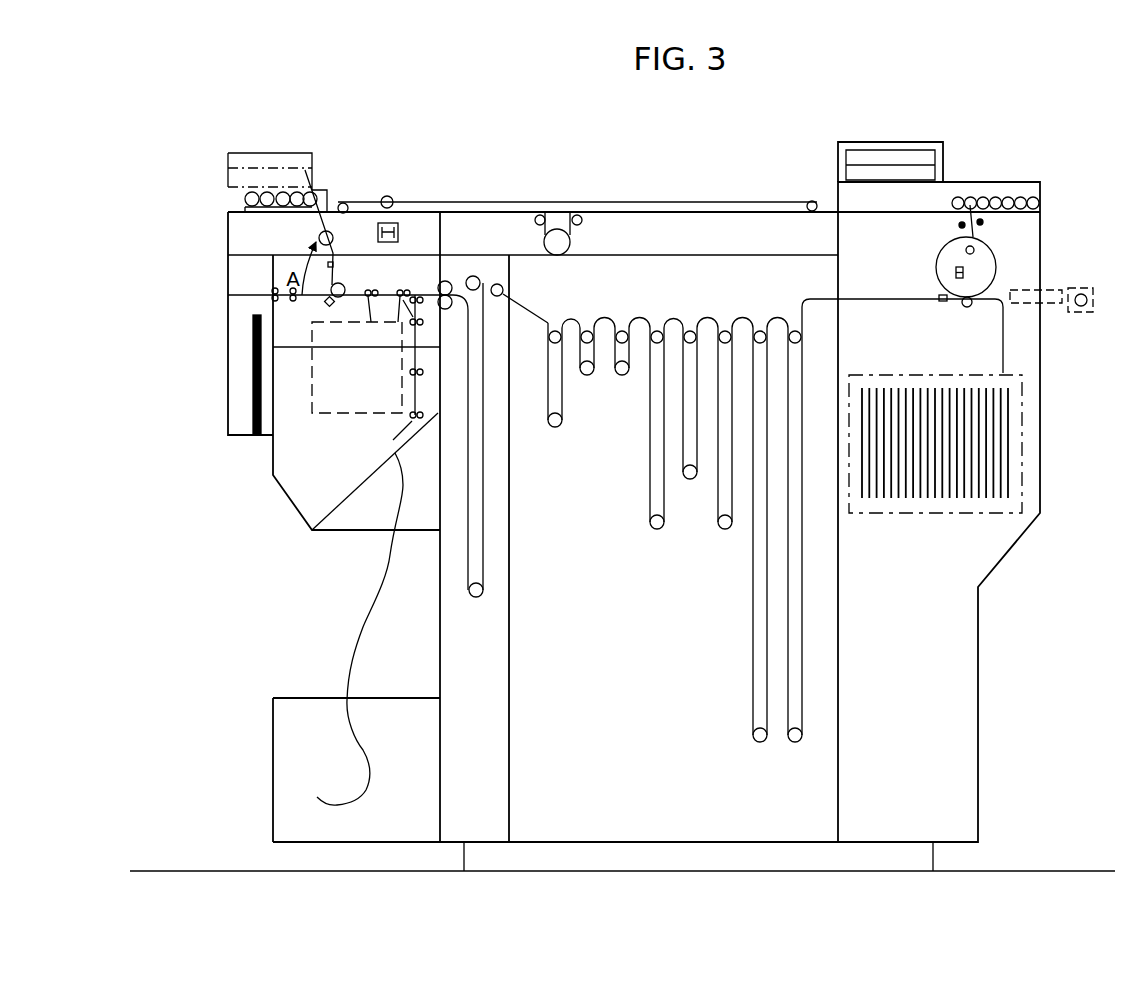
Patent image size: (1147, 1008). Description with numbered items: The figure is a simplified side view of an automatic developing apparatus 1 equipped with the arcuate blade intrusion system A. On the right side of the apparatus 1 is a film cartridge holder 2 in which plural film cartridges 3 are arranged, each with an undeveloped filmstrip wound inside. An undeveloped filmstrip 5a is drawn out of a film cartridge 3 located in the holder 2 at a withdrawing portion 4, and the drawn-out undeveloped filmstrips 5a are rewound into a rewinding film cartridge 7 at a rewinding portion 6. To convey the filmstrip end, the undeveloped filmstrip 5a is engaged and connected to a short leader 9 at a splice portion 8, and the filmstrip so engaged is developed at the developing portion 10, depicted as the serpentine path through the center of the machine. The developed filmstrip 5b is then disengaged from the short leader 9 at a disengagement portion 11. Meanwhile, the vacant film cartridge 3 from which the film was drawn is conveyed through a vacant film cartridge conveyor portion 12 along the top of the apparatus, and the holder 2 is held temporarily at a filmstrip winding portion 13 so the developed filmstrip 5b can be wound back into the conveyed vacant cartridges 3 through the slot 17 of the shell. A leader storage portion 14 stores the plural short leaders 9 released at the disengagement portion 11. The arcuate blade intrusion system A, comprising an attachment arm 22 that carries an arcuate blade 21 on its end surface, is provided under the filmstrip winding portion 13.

The automatic developing apparatus 1 is at (970, 144).
The film cartridge holder 2 is at (245, 197).
The film cartridge 3 is at (305, 170).
The withdrawing portion 4 is at (948, 227).
The undeveloped filmstrip 5a is at (977, 238).
The developed filmstrip 5b is at (373, 230).
The rewinding portion 6 is at (371, 303).
The rewinding film cartridge 7 is at (975, 249).
The splice portion 8 is at (969, 308).
The short leader 9 is at (313, 298).
The developing portion 10 is at (658, 318).
The disengagement portion 11 is at (350, 283).
The vacant film cartridge conveyor portion 12 is at (585, 202).
The filmstrip winding portion 13 is at (327, 210).
The leader storage portion 14 is at (253, 363).
The slot 17 is at (333, 207).
The arcuate blade 21 is at (320, 223).
The attachment arm 22 is at (312, 216).